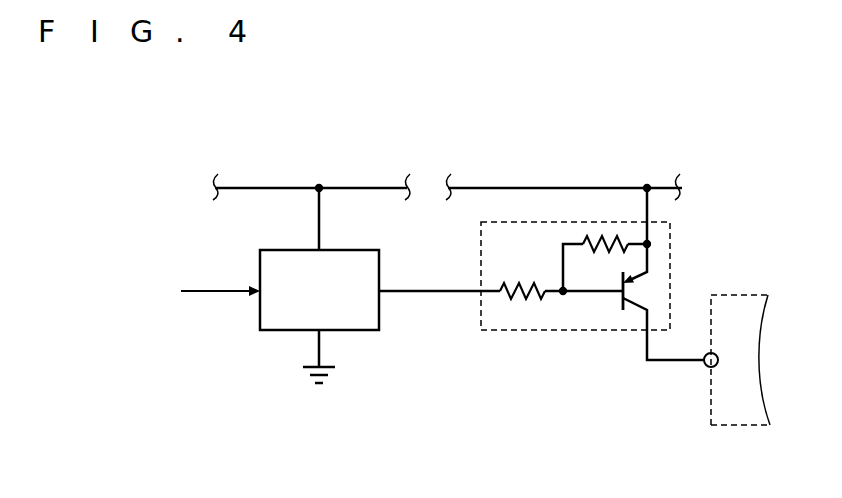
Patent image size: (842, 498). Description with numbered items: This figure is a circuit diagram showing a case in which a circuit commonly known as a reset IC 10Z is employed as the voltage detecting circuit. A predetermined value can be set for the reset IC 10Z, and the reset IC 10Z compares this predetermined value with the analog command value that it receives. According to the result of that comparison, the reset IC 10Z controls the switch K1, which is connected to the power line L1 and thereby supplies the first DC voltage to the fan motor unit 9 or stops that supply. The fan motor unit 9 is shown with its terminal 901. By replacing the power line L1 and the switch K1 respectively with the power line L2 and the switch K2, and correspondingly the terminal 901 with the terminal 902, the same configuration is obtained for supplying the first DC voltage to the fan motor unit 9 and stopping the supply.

The power line L1 is at (352, 188).
The power line L2 is at (494, 188).
The reset IC 10Z is at (355, 250).
The switch K1 is at (584, 274).
The switch K2 is at (672, 233).
The fan motor unit 9 is at (743, 292).
The terminal 901 is at (723, 407).
The terminal 902 is at (704, 367).